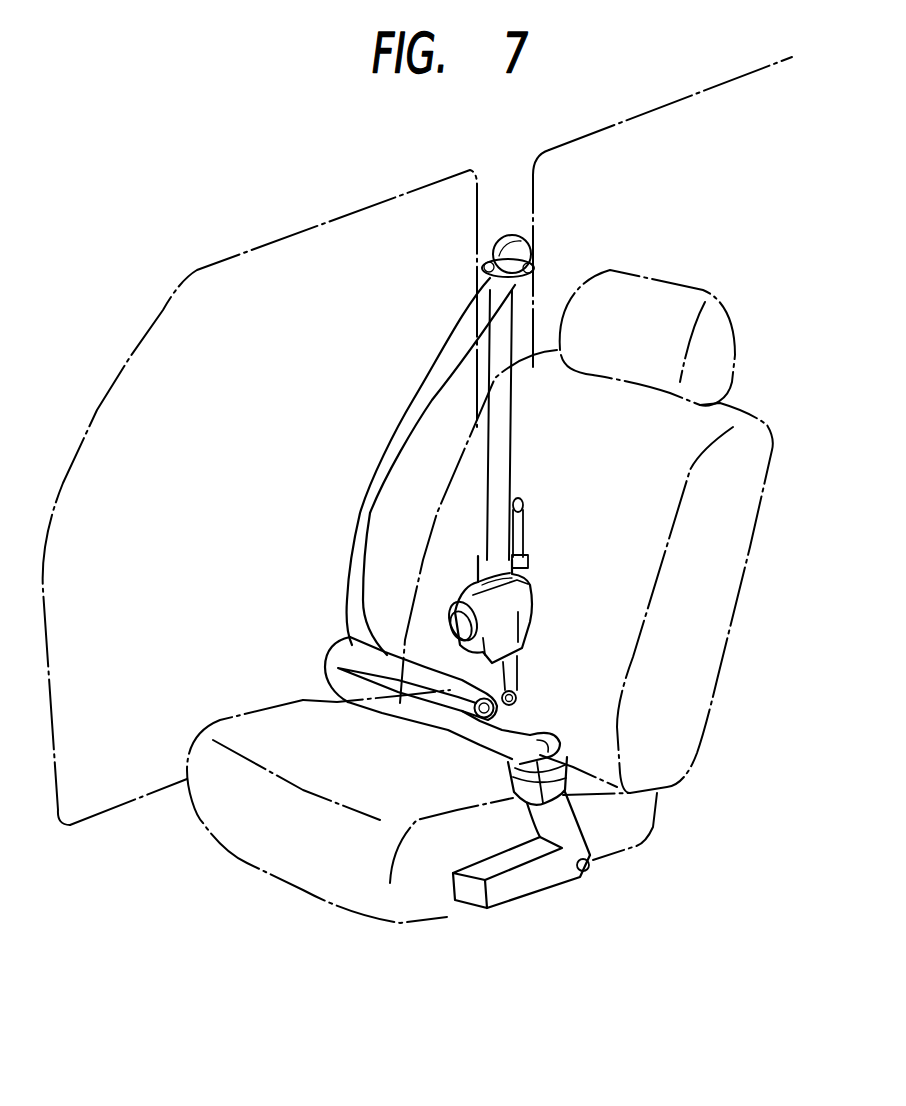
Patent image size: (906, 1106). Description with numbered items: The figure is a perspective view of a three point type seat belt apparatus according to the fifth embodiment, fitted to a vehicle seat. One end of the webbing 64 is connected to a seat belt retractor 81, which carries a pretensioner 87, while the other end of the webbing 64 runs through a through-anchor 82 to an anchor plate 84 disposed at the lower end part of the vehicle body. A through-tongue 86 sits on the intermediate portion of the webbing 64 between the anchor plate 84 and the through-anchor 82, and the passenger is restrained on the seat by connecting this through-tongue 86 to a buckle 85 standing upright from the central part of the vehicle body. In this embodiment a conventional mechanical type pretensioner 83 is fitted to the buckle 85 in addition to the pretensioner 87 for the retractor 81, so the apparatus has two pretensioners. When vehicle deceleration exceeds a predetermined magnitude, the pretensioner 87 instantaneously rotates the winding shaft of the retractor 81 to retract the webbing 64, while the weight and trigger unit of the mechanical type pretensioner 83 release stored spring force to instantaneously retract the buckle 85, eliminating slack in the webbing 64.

The webbing 64 is at (417, 400).
The through-anchor 82 is at (530, 250).
The pretensioner 87 is at (530, 567).
The seat belt retractor 81 is at (543, 613).
The anchor plate 84 is at (415, 675).
The buckle 85 is at (512, 784).
The through-tongue 86 is at (517, 737).
The mechanical type pretensioner 83 is at (548, 890).